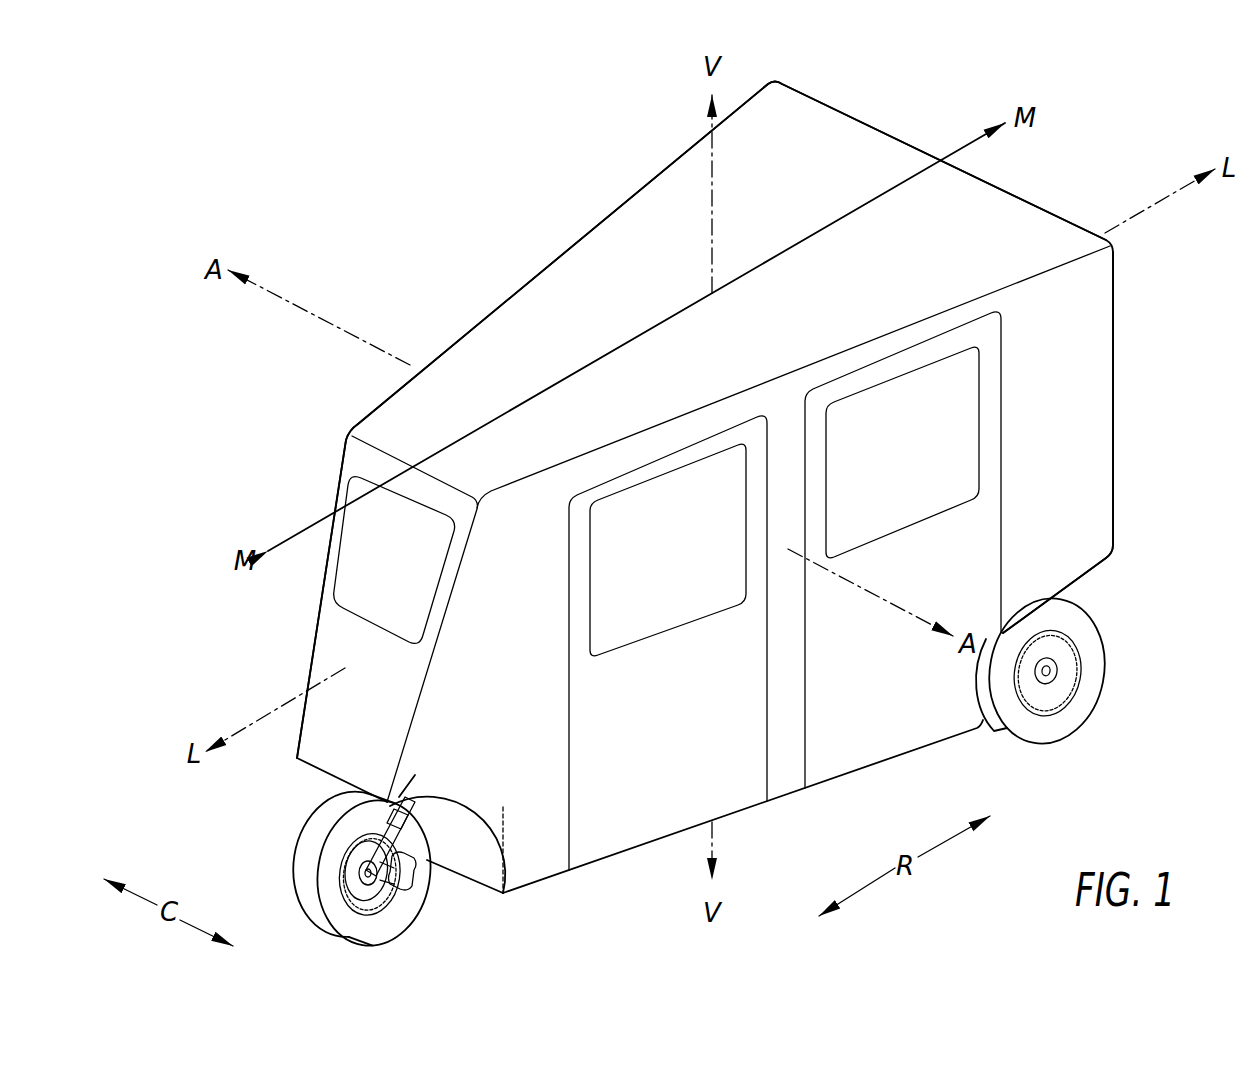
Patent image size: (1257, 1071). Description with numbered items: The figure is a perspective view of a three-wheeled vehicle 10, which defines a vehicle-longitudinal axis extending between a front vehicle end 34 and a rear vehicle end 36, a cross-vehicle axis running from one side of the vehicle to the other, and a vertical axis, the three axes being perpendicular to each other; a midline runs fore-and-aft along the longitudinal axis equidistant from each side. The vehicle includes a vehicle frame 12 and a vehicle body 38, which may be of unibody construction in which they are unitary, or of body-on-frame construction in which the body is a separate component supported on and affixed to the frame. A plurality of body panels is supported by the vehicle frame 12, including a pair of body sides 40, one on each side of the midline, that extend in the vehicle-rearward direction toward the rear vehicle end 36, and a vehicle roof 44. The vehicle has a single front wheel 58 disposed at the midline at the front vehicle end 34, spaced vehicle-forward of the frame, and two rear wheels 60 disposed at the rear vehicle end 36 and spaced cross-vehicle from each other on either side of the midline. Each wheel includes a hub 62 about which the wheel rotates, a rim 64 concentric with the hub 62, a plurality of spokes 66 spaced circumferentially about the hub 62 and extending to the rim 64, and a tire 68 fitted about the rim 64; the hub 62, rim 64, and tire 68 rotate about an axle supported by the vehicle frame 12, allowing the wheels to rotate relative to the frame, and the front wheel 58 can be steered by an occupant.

The three-wheeled vehicle 10 is at (1113, 130).
The vehicle frame 12 is at (659, 193).
The front vehicle end 34 is at (274, 644).
The rear vehicle end 36 is at (1140, 433).
The vehicle body 38 is at (844, 102).
The body sides 40 is at (563, 249).
The vehicle roof 44 is at (872, 152).
The front wheel 58 is at (278, 851).
The rear wheels 60 is at (1122, 640).
The hub 62 is at (355, 874).
The rim 64 is at (385, 905).
The spokes 66 is at (364, 838).
The tire 68 is at (348, 928).